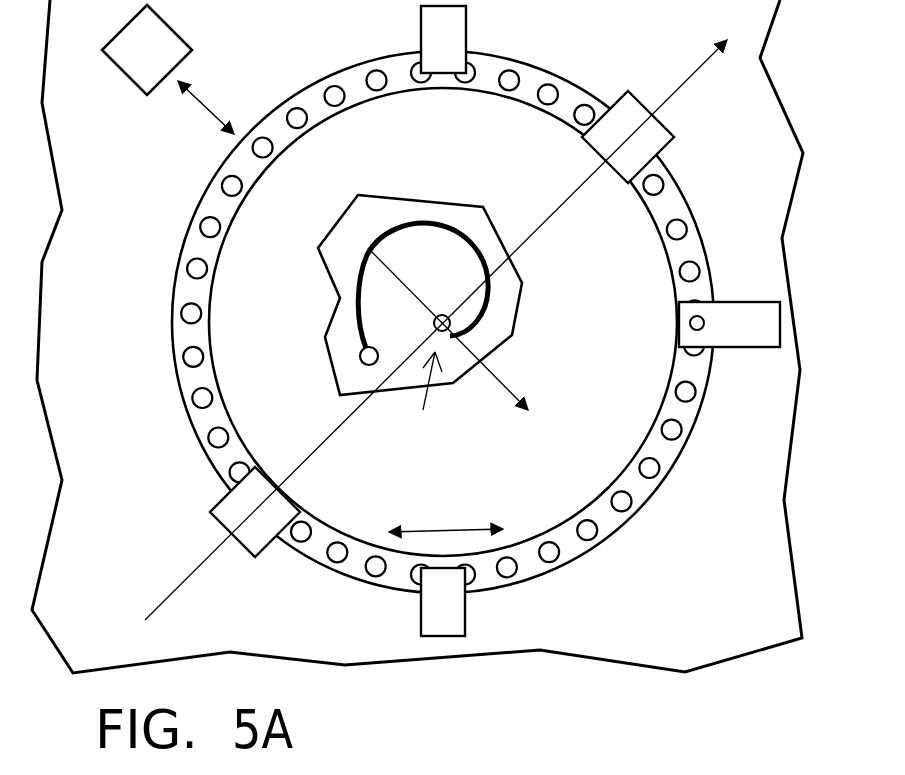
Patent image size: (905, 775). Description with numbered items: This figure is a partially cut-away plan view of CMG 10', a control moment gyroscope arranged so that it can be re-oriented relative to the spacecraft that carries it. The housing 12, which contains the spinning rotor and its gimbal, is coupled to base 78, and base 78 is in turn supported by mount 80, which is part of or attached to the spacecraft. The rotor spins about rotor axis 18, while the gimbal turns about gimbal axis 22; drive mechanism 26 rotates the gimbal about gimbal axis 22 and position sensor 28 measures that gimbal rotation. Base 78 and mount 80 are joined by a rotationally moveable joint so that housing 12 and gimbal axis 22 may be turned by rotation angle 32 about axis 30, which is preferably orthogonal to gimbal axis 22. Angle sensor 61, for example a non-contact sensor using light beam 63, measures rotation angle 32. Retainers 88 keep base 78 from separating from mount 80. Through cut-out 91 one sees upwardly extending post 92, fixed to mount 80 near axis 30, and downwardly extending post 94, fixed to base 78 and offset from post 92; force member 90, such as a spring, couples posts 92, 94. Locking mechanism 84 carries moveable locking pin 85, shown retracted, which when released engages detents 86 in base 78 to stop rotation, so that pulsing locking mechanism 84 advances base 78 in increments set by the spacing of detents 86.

The CMG 10' is at (769, 742).
The housing 12 is at (430, 181).
The rotor axis 18 is at (517, 408).
The gimbal axis 22 is at (677, 88).
The drive mechanism 26 is at (623, 99).
The position sensor 28 is at (218, 500).
The axis 30 is at (424, 399).
The rotation angle 32 is at (442, 532).
The angle sensor 61 is at (110, 63).
The light beam 63 is at (213, 110).
The base 78 is at (678, 205).
The mount 80 is at (746, 622).
The locking mechanism 84 is at (747, 347).
The locking pin 85 is at (704, 322).
The detents 86 is at (207, 412).
The retainers 88 is at (421, 40).
The force member 90 is at (362, 272).
The cut-out 91 is at (331, 281).
The upwardly extending post 92 is at (437, 315).
The downwardly extending post 94 is at (379, 355).